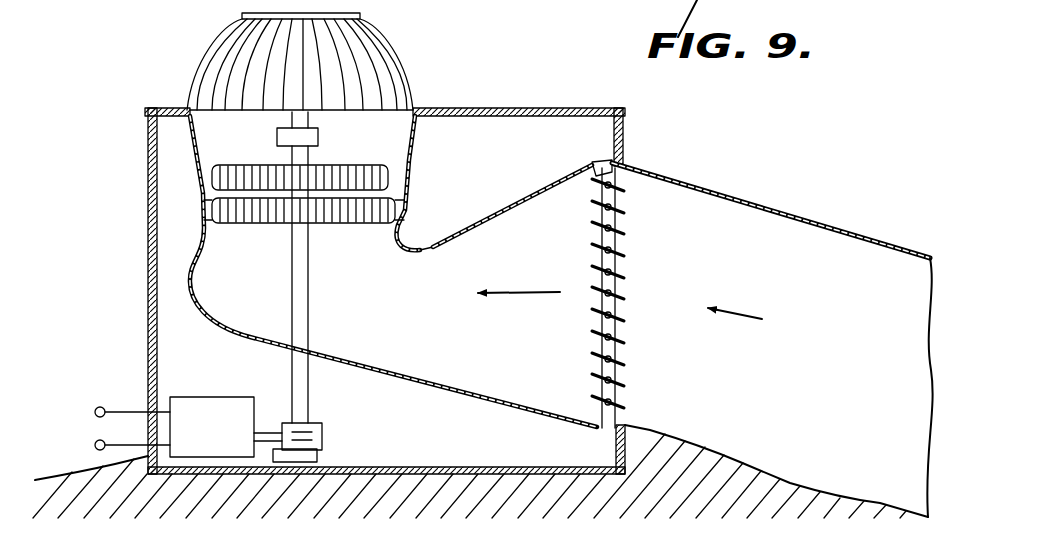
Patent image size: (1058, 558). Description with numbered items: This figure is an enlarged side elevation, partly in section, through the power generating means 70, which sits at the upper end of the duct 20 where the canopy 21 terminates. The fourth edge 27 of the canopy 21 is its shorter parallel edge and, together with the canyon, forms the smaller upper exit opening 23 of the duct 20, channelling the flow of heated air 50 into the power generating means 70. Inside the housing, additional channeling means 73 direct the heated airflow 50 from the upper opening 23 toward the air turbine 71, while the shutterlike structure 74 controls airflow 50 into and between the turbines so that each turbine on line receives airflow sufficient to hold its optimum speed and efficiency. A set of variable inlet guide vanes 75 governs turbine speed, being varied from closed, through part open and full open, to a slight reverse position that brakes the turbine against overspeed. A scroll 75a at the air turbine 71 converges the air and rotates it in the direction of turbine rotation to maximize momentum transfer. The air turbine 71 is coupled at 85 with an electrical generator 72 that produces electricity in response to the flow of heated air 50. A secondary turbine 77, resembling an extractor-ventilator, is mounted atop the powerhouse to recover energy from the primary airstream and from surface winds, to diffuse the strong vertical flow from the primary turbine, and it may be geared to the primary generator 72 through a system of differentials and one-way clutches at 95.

The power generating means 70 is at (492, 58).
The secondary turbine 77 is at (205, 58).
The air turbine 71 is at (197, 191).
The variable inlet guide vanes 75 is at (340, 226).
The scroll 75a is at (480, 222).
The channeling means 73 is at (540, 182).
The differential and one-way clutch system 95 is at (318, 137).
The shutterlike structure 74 is at (620, 288).
The fourth edge of the canopy 27 is at (618, 165).
The canopy 21 is at (904, 240).
The upper exit opening 23 is at (628, 235).
The duct 20 is at (483, 388).
The heated air flow 50 is at (523, 294).
The electrical generator 72 is at (170, 427).
The coupling 85 is at (331, 440).